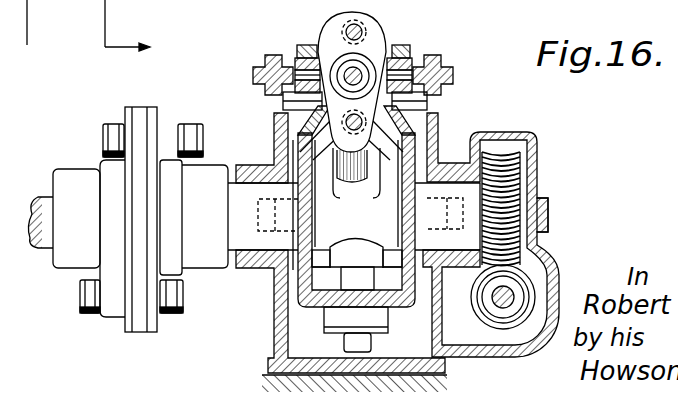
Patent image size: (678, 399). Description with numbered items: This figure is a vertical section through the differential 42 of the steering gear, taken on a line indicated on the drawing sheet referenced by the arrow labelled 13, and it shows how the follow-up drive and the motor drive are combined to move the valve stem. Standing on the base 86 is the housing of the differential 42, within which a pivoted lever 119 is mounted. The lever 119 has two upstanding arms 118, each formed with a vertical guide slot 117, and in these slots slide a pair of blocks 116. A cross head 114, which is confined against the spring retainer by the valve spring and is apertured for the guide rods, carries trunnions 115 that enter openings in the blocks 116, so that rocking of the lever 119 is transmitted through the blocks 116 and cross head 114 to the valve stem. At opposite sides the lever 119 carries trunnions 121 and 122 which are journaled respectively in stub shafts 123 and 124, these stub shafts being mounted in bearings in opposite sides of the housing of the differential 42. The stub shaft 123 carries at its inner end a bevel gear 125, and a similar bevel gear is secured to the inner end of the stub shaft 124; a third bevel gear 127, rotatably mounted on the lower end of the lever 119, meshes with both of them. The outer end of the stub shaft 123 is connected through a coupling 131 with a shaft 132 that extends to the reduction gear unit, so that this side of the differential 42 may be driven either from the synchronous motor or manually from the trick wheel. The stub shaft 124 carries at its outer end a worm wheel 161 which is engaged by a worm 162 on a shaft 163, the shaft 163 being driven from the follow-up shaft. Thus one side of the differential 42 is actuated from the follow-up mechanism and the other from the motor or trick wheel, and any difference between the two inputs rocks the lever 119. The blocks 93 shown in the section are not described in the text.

The section line reference 13 is at (98, 28).
The differential 42 is at (437, 137).
The base 86 is at (447, 383).
The bearing blocks 93 is at (253, 72).
The cross head 114 is at (374, 36).
The trunnions 115 is at (304, 70).
The blocks 116 is at (307, 45).
The vertical guide slots 117 is at (283, 97).
The arms 118 is at (282, 116).
The pivoted lever 119 is at (351, 205).
The trunnion 121 is at (258, 212).
The trunnion 122 is at (548, 202).
The stub shaft 123 is at (244, 224).
The stub shaft 124 is at (549, 222).
The bevel gear 125 is at (300, 284).
The third bevel gear 127 is at (308, 306).
The coupling 131 is at (130, 108).
The shaft 132 is at (34, 197).
The worm wheel 161 is at (519, 183).
The worm 162 is at (533, 292).
The shaft 163 is at (514, 289).